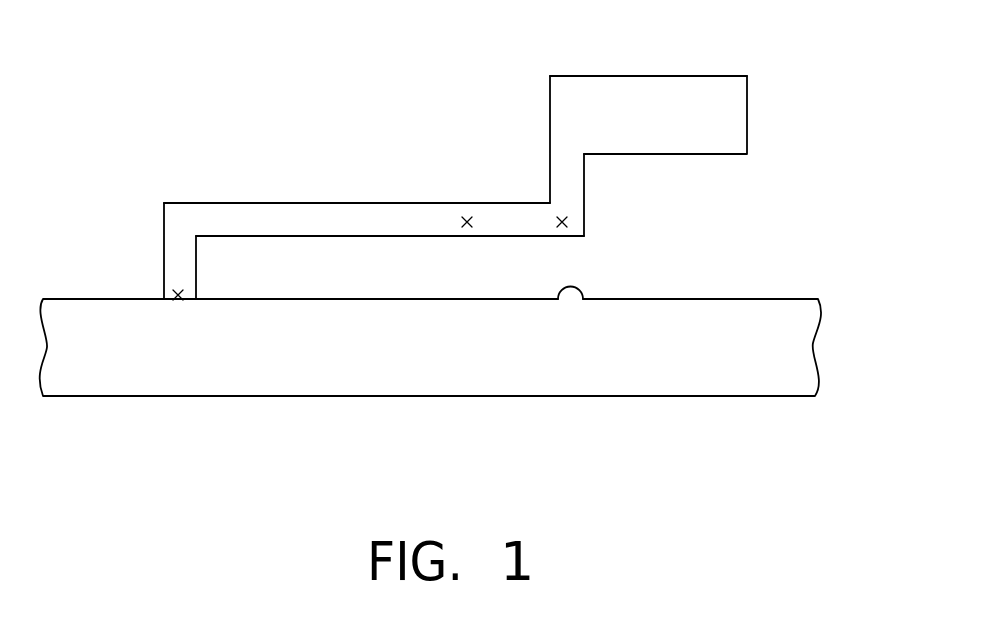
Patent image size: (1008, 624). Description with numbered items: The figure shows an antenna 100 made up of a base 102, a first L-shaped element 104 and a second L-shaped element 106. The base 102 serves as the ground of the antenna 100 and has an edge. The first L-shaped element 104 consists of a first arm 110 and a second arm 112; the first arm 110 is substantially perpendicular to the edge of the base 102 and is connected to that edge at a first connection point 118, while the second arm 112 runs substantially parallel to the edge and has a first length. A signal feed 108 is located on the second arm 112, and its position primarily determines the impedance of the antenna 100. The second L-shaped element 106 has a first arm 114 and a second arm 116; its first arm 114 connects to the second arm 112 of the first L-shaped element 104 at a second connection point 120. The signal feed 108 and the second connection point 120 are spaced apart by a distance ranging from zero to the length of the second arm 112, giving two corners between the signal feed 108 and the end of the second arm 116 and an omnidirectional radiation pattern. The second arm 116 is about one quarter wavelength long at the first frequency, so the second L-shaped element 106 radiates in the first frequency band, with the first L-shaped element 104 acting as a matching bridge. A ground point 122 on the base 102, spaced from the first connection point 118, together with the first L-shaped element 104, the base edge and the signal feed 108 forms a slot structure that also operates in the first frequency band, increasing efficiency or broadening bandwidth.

The antenna 100 is at (745, 243).
The base 102 is at (460, 396).
The first L-shaped element 104 is at (172, 215).
The second L-shaped element 106 is at (562, 86).
The signal feed 108 is at (470, 218).
The first arm 110 is at (175, 252).
The second arm 112 is at (318, 213).
The first arm 114 is at (574, 178).
The second arm 116 is at (652, 88).
The first connection point 118 is at (170, 293).
The second connection point 120 is at (568, 221).
The ground point 122 is at (572, 296).